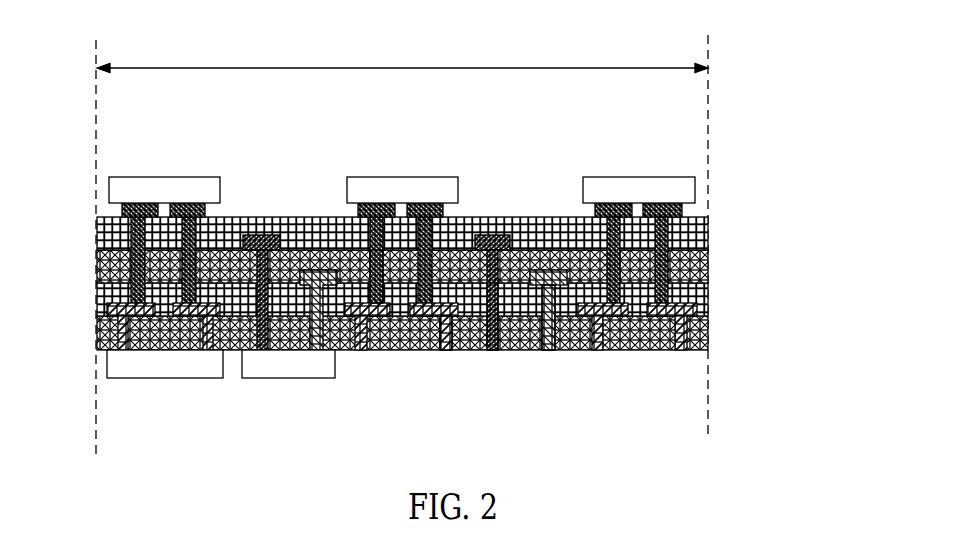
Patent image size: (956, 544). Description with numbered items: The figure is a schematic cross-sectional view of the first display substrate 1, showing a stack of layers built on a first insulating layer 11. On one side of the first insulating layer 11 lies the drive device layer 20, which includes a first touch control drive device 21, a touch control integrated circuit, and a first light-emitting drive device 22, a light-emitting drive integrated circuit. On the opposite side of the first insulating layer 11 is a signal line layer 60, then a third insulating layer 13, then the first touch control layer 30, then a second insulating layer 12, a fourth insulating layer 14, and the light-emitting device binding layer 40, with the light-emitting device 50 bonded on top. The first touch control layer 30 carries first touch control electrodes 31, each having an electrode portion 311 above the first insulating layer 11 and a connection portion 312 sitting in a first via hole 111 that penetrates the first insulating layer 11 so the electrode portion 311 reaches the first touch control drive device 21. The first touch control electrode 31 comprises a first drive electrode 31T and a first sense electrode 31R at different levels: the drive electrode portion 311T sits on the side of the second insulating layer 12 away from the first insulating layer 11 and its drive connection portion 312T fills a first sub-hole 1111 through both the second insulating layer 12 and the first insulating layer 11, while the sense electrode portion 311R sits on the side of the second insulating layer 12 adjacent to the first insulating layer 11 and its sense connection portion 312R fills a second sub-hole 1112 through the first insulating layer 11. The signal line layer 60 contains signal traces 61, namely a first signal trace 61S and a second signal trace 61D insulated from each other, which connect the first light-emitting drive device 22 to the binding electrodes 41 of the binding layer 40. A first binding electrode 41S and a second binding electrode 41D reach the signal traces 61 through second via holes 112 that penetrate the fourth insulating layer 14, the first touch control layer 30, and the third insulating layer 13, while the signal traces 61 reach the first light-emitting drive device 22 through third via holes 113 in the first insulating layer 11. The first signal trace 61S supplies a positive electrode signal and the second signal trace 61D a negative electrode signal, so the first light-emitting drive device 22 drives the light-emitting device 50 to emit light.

The first display substrate 1 is at (200, 41).
The first insulating layer 11 is at (695, 335).
The first via hole 111 is at (522, 361).
The first sub-hole 1111 is at (494, 278).
The second sub-hole 1112 is at (548, 292).
The second via hole 112 is at (377, 282).
The third via hole 113 is at (442, 323).
The second insulating layer 12 is at (695, 268).
The third insulating layer 13 is at (695, 295).
The fourth insulating layer 14 is at (695, 232).
The drive device layer 20 is at (221, 408).
The first touch control drive device 21 is at (288, 389).
The first light-emitting drive device 22 is at (152, 368).
The first touch control layer 30 is at (409, 212).
The first touch control electrode 31 is at (409, 212).
The electrode portion 311 is at (257, 235).
The connection portion 312 is at (268, 285).
The first drive electrode 31T is at (444, 229).
The drive electrode portion 311T is at (482, 235).
The drive connection portion 312T is at (490, 248).
The first sense electrode 31R is at (537, 229).
The sense electrode portion 311R is at (563, 268).
The sense connection portion 312R is at (545, 270).
The light-emitting device binding layer 40 is at (684, 209).
The binding electrode 41 is at (637, 201).
The first binding electrode 41S is at (612, 205).
The second binding electrode 41D is at (662, 220).
The light-emitting device 50 is at (680, 188).
The signal line layer 60 is at (434, 367).
The signal trace 61 is at (637, 367).
The first signal trace 61S is at (610, 312).
The second signal trace 61D is at (658, 312).